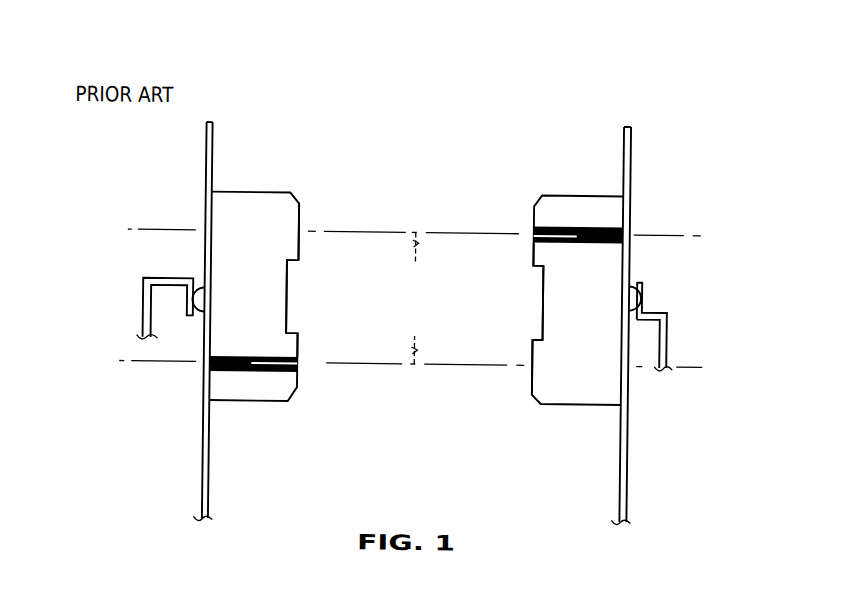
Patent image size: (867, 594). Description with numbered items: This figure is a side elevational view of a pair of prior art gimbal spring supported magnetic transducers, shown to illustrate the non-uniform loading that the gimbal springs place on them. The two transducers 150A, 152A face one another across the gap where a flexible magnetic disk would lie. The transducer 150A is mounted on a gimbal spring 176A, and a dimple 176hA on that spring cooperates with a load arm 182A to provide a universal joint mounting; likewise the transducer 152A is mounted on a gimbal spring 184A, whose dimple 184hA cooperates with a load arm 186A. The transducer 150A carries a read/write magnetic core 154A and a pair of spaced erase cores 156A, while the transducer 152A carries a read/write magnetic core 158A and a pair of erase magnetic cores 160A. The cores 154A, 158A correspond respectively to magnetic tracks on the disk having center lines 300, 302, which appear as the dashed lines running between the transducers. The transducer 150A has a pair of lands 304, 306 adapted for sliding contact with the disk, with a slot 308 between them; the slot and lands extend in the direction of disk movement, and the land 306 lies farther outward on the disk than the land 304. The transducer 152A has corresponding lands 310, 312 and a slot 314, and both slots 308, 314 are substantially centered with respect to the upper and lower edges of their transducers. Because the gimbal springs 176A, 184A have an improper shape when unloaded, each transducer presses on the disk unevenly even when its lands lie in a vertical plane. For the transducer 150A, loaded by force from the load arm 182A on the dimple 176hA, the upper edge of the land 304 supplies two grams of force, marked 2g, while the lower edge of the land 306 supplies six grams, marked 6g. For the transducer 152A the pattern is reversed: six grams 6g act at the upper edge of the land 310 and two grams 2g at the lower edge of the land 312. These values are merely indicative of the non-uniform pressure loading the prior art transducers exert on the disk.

The gimbal spring 184A is at (172, 321).
The dimple 184hA is at (202, 284).
The load arm 186A is at (136, 308).
The transducer 152A is at (254, 270).
The land 310 is at (331, 236).
The slot 314 is at (324, 297).
The land 312 is at (329, 342).
The erase magnetic cores 160A is at (255, 377).
The read/write magnetic core 158A is at (298, 369).
The six grams of force 6g is at (298, 205).
The two grams of force 2g is at (298, 392).
The track center line 300 is at (419, 263).
The track center line 302 is at (418, 337).
The transducer 150A is at (578, 277).
The land 304 is at (501, 255).
The slot 308 is at (505, 302).
The land 306 is at (499, 359).
The erase cores 156A is at (553, 225).
The read/write magnetic core 154A is at (532, 234).
The gimbal spring 176A is at (661, 326).
The dimple 176hA is at (634, 282).
The load arm 182A is at (691, 327).